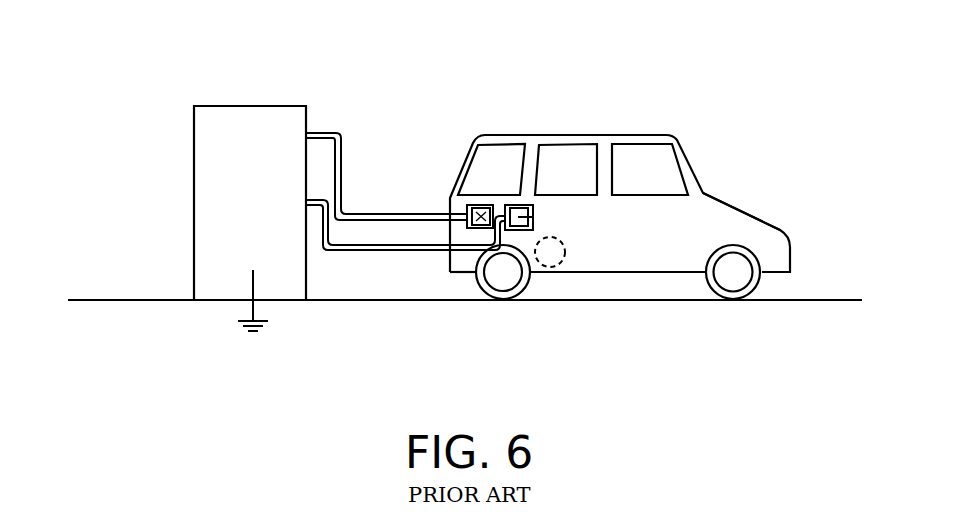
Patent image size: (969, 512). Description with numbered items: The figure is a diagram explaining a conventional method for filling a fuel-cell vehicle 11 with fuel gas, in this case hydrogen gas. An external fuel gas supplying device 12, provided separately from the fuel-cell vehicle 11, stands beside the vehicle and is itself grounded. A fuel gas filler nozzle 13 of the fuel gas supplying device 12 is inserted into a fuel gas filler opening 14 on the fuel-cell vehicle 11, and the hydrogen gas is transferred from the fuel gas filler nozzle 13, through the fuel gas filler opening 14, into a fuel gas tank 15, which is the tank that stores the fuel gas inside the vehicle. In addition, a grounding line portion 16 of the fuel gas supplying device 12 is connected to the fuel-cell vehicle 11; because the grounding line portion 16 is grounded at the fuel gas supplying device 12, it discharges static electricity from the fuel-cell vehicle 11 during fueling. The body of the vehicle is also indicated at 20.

The fuel-cell vehicle 11 is at (681, 134).
The fuel gas supplying device 12 is at (304, 106).
The fuel gas filler nozzle 13 is at (490, 204).
The fuel gas filler opening 14 is at (468, 227).
The fuel gas tank 15 is at (563, 262).
The grounding line portion 16 is at (536, 208).
The vehicle body 20 is at (710, 210).